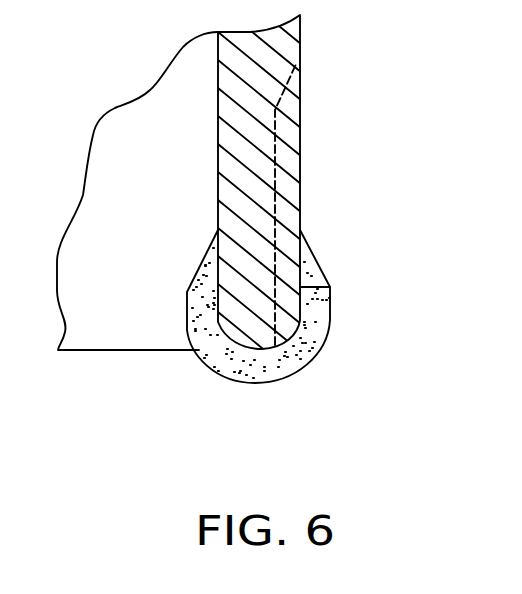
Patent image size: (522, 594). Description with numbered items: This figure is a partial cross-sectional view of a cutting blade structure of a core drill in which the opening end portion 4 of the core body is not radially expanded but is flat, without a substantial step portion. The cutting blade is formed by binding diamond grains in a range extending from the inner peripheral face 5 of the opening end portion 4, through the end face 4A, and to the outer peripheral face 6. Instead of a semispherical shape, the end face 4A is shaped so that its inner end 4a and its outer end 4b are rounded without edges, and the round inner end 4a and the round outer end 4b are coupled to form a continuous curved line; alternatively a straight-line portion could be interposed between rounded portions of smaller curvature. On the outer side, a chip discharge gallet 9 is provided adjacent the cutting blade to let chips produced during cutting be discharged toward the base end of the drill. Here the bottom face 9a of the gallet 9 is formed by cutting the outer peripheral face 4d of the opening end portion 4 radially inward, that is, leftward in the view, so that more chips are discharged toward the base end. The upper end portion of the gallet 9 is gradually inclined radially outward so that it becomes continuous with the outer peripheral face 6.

The opening end portion 4 is at (280, 320).
The inner end 4a is at (233, 343).
The outer end 4b is at (297, 330).
The outer peripheral face 4d is at (330, 287).
The end face 4A is at (257, 350).
The inner peripheral face 5 is at (218, 129).
The outer peripheral face 6 is at (300, 43).
The chip discharge gallet 9 is at (282, 328).
The bottom face 9a is at (275, 258).